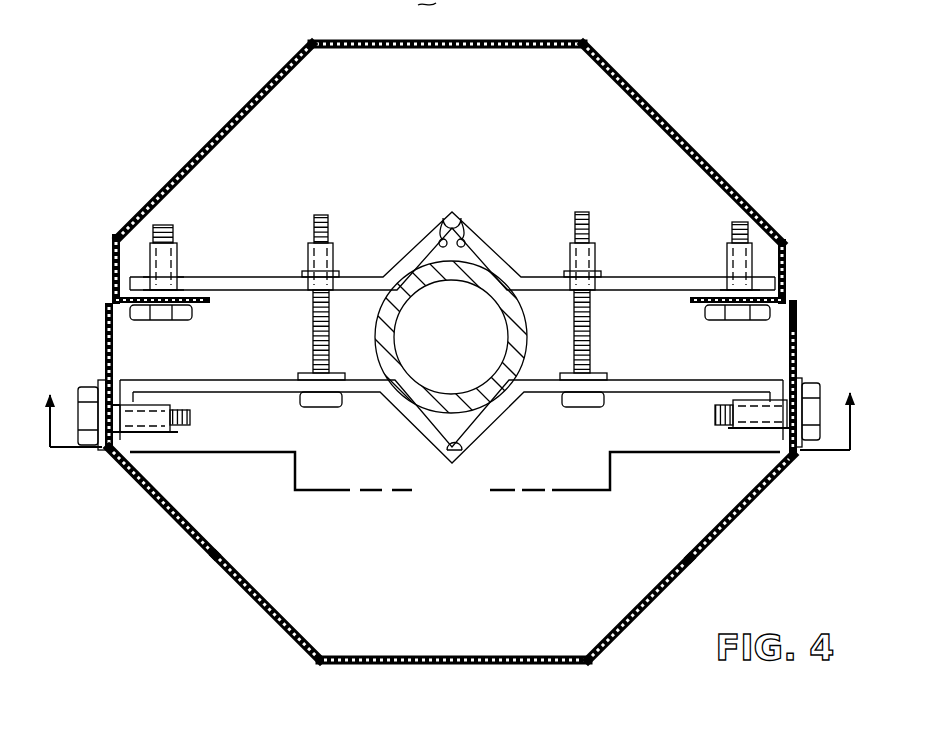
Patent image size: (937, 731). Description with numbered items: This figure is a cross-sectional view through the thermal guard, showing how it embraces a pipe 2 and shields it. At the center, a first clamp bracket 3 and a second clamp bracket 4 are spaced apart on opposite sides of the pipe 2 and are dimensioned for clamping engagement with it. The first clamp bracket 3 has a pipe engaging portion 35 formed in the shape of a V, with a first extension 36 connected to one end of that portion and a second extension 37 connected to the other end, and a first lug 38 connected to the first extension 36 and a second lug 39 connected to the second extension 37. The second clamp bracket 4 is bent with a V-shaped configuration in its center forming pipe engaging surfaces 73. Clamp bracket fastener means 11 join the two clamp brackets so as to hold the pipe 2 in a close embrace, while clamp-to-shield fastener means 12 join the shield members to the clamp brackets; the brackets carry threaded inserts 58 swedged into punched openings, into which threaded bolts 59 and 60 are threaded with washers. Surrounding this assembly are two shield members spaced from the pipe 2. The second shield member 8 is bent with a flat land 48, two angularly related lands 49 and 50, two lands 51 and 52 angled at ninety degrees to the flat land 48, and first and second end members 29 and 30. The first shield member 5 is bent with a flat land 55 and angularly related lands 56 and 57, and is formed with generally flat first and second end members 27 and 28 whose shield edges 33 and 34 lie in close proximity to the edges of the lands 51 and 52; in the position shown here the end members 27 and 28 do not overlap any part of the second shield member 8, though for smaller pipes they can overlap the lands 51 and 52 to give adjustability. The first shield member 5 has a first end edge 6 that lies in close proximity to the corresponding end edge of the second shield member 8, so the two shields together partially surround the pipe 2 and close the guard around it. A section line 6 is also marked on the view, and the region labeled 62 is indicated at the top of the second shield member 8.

The pipe 2 is at (532, 350).
The first clamp bracket 3 is at (654, 376).
The second clamp bracket 4 is at (638, 272).
The first shield member 5 is at (432, 554).
The first end edge of first shield member 6 is at (446, 441).
The second shield member 8 is at (456, 167).
The clamp bracket fastener means 11 is at (308, 328).
The clamp-to-shield fastener means 12 is at (185, 247).
The first end member of first shield member 27 is at (800, 342).
The second end member of first shield member 28 is at (105, 320).
The first end member of second shield member 29 is at (698, 304).
The second end member of second shield member 30 is at (200, 306).
The shield edge 33 is at (798, 308).
The shield edge 34 is at (110, 300).
The pipe engaging portion 35 is at (458, 450).
The first extension 36 is at (598, 405).
The second extension 37 is at (312, 408).
The first lug 38 is at (766, 470).
The second lug 39 is at (132, 468).
The flat land 48 is at (470, 41).
The angularly related land 49 is at (221, 135).
The angularly related land 50 is at (642, 97).
The land 51 is at (790, 262).
The land 52 is at (110, 262).
The flat land 55 is at (441, 656).
The angularly related land 56 is at (232, 578).
The angularly related land 57 is at (630, 618).
The threaded insert 58 is at (180, 276).
The threaded bolt 59 is at (322, 215).
The threaded bolt 60 is at (166, 228).
The frame opening 62 is at (406, 9).
The pipe engaging surfaces 73 is at (455, 235).